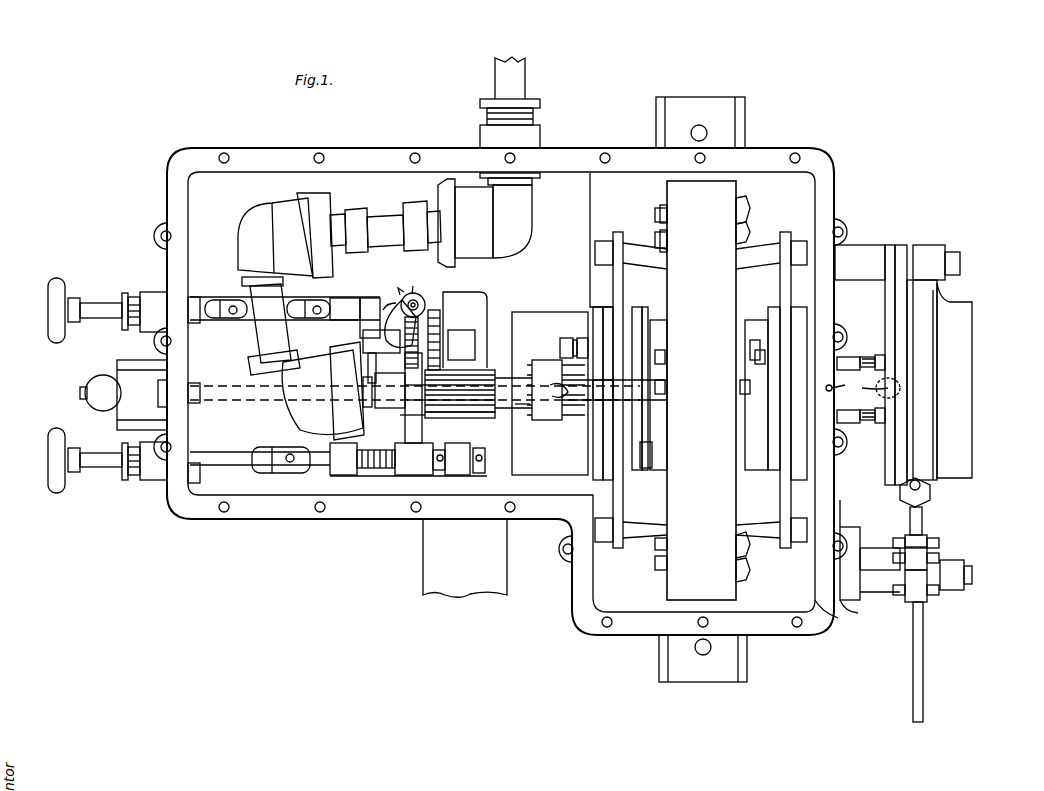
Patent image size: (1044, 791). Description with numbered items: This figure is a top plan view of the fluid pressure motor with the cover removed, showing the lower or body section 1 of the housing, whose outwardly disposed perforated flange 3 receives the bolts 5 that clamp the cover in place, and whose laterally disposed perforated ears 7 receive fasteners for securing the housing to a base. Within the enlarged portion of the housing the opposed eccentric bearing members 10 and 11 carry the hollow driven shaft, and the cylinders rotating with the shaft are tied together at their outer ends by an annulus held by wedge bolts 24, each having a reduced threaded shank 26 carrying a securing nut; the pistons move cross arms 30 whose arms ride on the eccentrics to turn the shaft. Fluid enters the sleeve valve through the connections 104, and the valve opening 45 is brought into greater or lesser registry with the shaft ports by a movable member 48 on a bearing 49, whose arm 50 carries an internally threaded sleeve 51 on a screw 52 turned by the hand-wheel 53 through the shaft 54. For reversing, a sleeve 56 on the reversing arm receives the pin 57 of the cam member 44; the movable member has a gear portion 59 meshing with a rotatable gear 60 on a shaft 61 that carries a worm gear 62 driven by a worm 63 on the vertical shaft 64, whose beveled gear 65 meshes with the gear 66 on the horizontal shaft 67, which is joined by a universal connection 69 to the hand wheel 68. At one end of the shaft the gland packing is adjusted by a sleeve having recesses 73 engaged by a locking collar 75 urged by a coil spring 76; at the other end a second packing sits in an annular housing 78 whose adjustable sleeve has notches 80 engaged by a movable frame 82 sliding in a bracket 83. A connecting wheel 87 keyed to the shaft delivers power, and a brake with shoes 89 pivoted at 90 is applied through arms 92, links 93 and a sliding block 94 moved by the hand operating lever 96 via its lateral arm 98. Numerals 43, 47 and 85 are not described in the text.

The lower or body section 1 is at (815, 633).
The perforated flange 3 is at (838, 618).
The bolts 5 is at (563, 35).
The perforated ears 7 is at (745, 125).
The eccentric bearing member 10 is at (768, 318).
The eccentric member 11 is at (638, 320).
The wedge bolts 24 is at (750, 210).
The reduced threaded shank 26 is at (618, 213).
The cross arms 30 is at (758, 245).
The block 43 is at (648, 468).
The cam member 44 is at (648, 335).
The opening 45 is at (850, 527).
The nut 47 is at (972, 585).
The movable member 48 is at (490, 412).
The bearing 49 is at (470, 292).
The arm 50 is at (418, 425).
The internally threaded sleeve 51 is at (415, 462).
The screw 52 is at (380, 468).
The hand-wheel 53 is at (60, 448).
The shaft 54 is at (210, 462).
The sleeve 56 is at (582, 338).
The pin 57 is at (566, 338).
The gear portion 59 is at (488, 372).
The rotatable gear 60 is at (437, 310).
The shaft 61 is at (485, 338).
The worm gear 62 is at (401, 334).
The worm 63 is at (420, 298).
The vertical shaft 64 is at (400, 293).
The beveled gear 65 is at (413, 293).
The gear 66 is at (390, 303).
The horizontal shaft 67 is at (325, 300).
The hand wheel 68 is at (60, 298).
The universal connection 69 is at (228, 302).
The recesses 73 is at (515, 404).
The locking collar 75 is at (540, 360).
The coil spring 76 is at (551, 387).
The annular housing 78 is at (848, 357).
The notches 80 is at (880, 423).
The movable frame 82 is at (890, 395).
The bracket 83 is at (667, 192).
The pin 85 is at (857, 382).
The connecting wheel 87 is at (667, 218).
The brake shoes 89 is at (930, 365).
The pivotal connection 90 is at (960, 262).
The arms 92 is at (922, 521).
The links 93 is at (939, 555).
The sliding block 94 is at (882, 592).
The hand operating lever 96 is at (920, 655).
The lateral arm 98 is at (927, 595).
The connections 104 is at (300, 232).